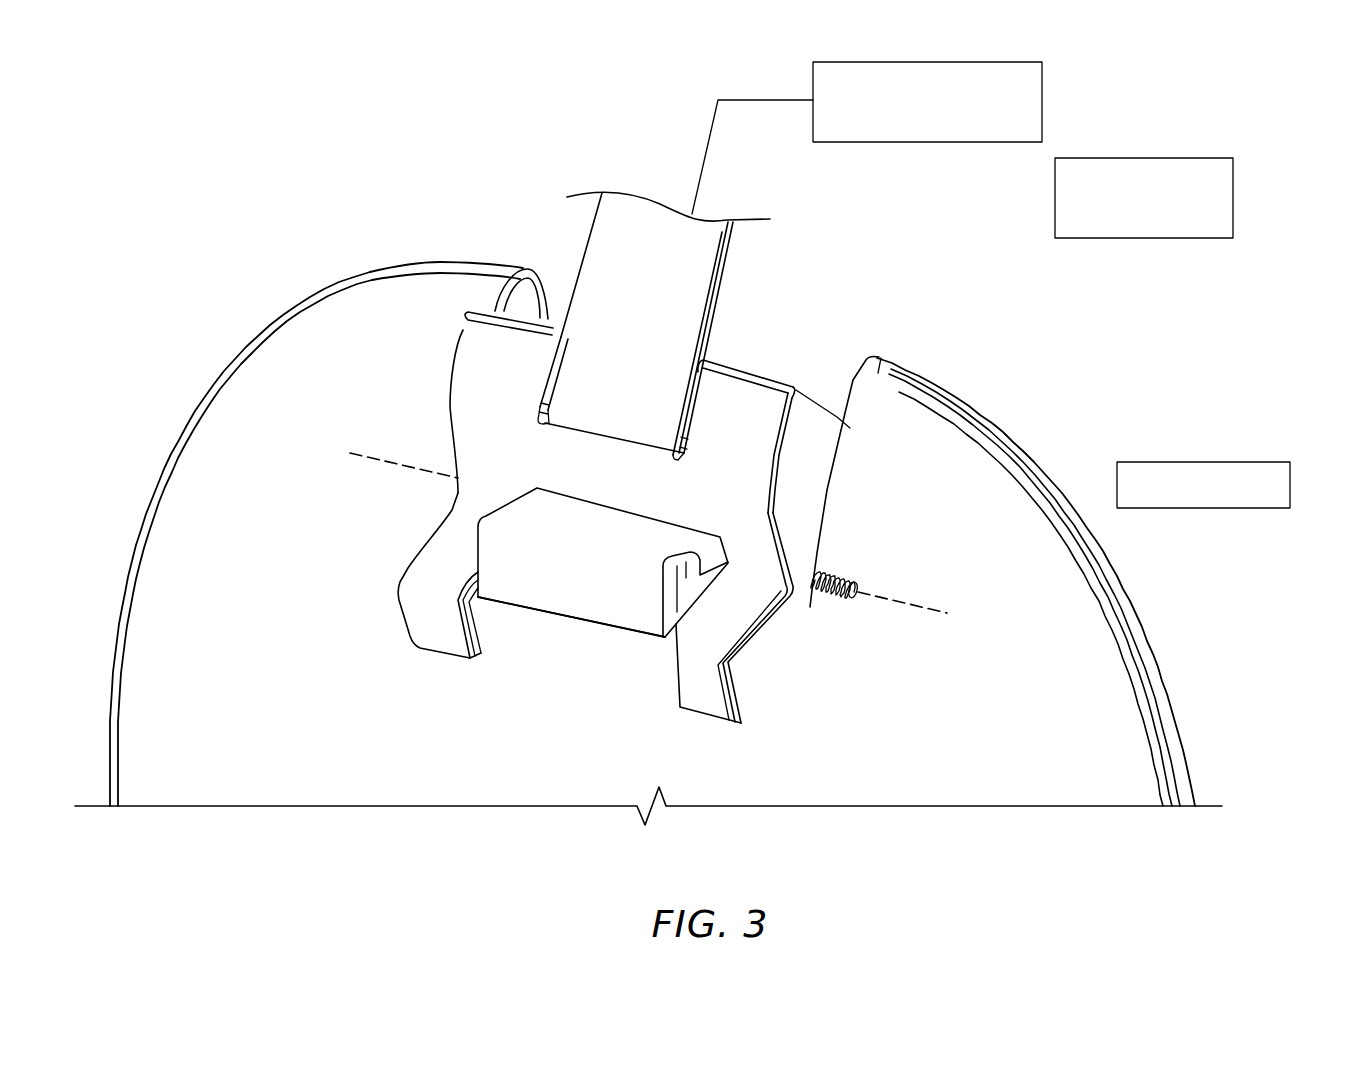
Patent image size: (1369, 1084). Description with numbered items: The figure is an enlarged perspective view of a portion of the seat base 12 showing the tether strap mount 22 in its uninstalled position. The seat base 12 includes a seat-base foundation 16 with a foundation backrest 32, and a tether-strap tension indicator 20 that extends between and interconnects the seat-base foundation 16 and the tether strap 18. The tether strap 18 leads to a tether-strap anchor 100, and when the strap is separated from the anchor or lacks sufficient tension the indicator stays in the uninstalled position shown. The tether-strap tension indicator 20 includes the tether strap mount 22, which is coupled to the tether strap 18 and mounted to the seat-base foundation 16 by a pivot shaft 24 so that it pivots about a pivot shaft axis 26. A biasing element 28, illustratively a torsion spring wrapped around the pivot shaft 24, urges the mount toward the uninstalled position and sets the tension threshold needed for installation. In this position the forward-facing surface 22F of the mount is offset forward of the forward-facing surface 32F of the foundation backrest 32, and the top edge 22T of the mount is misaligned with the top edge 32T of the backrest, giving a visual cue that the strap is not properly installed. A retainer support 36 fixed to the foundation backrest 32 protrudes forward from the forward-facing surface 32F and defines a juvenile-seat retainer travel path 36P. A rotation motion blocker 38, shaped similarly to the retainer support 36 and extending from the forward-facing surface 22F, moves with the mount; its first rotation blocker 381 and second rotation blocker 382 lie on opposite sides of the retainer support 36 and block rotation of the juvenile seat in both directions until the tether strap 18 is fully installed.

The seat base 12 is at (412, 122).
The seat-base foundation 16 is at (1188, 689).
The tether strap 18 is at (1055, 198).
The tether-strap tension indicator 20 is at (871, 317).
The tether strap mount 22 is at (749, 297).
The forward-facing surface 22F is at (463, 362).
The top edge 22T is at (556, 286).
The pivot shaft 24 is at (835, 607).
The pivot shaft axis 26 is at (906, 605).
The biasing element 28 is at (849, 580).
The foundation backrest 32 is at (963, 394).
The forward-facing surface 32F is at (372, 330).
The top edge 32T is at (512, 261).
The retainer support 36 is at (565, 631).
The juvenile-seat retainer travel path 36P is at (620, 641).
The rotation motion blocker 38 is at (428, 773).
The first rotation blocker 381 is at (432, 664).
The second rotation blocker 382 is at (713, 730).
The tether-strap anchor 100 is at (1042, 100).